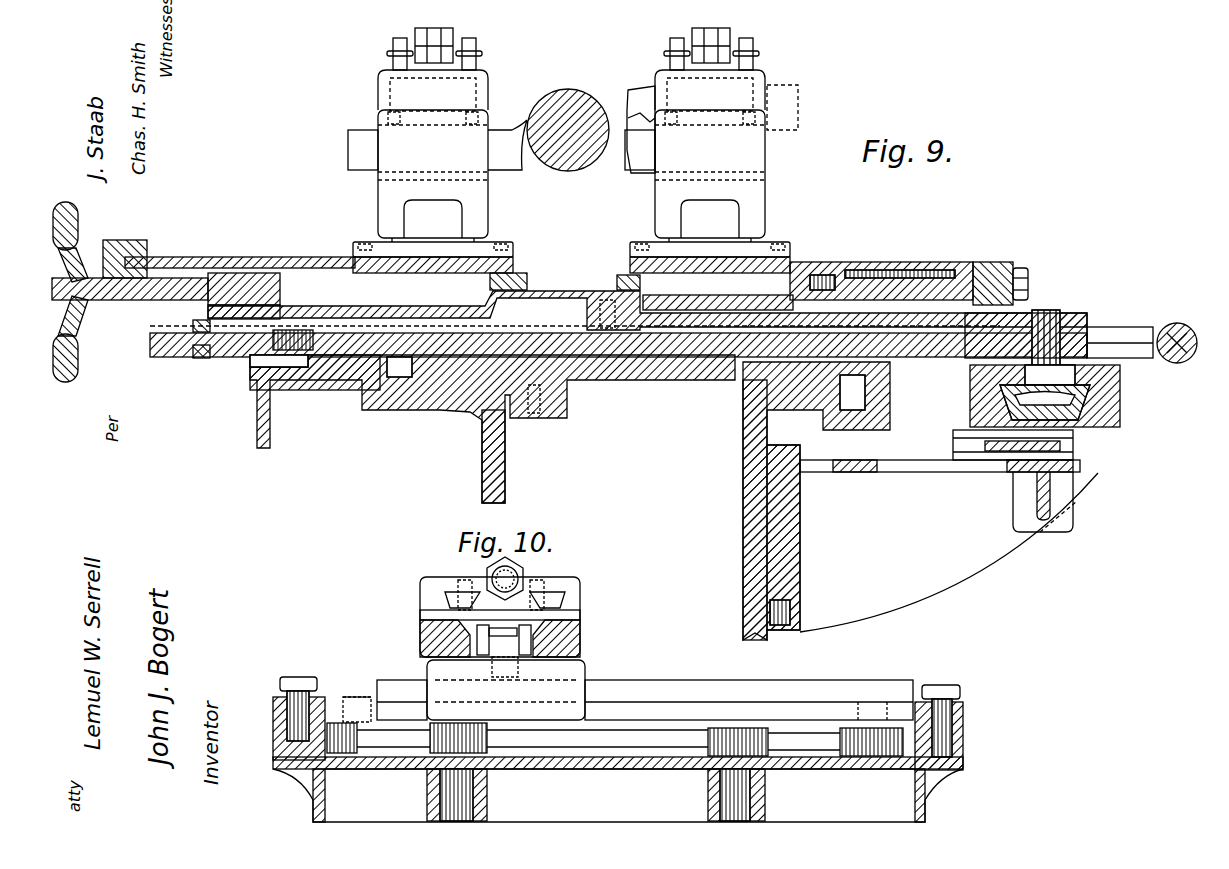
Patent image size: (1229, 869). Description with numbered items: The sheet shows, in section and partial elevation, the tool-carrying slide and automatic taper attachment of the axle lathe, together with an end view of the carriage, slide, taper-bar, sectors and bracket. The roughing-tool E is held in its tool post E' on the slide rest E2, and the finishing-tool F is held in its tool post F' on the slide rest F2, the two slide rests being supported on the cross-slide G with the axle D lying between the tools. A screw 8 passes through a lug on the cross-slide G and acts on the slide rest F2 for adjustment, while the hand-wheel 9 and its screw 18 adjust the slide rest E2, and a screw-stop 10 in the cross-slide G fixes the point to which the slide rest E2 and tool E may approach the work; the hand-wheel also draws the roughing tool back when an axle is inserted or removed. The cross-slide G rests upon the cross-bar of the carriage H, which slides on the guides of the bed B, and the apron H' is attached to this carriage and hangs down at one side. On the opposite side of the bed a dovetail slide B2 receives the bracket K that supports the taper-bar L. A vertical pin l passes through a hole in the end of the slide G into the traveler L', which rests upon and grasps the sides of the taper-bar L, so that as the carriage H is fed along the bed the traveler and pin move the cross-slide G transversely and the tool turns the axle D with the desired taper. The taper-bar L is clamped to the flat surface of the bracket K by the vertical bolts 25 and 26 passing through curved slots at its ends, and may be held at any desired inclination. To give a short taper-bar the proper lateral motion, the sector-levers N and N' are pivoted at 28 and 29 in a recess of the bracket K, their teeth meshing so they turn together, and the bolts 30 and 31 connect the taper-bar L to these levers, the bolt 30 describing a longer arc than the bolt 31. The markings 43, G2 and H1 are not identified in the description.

In FIG. 9, the hand-wheel 9 is at (166, 292).
In FIG. 9, the screw 18 is at (200, 302).
In FIG. 9, the screw-stop 10 is at (194, 350).
In FIG. 9, the screw 8 is at (958, 275).
In FIG. 10, the screw 8 is at (510, 580).
In FIG. 9, the rod end 43 is at (1182, 358).
In FIG. 10, the vertical bolt 25 is at (299, 707).
In FIG. 10, the bolt 31 is at (355, 697).
In FIG. 10, the vertical bolt 26 is at (939, 716).
In FIG. 10, the pivot 28 is at (457, 795).
In FIG. 10, the pivot 29 is at (752, 787).
In FIG. 10, the bolt 30 is at (862, 700).
In FIG. 9, the roughing-tool E is at (507, 145).
In FIG. 9, the tool post E' is at (430, 142).
In FIG. 9, the slide rest E2 is at (326, 260).
In FIG. 9, the finishing-tool F is at (641, 129).
In FIG. 9, the tool post F' is at (711, 142).
In FIG. 9, the slide rest F2 is at (795, 272).
In FIG. 10, the slide rest F2 is at (422, 586).
In FIG. 9, the axle D is at (568, 121).
In FIG. 9, the cross-slide G is at (576, 283).
In FIG. 10, the cross-slide G is at (420, 618).
In FIG. 9, the slide end block G2 is at (1078, 315).
In FIG. 9, the carriage H is at (583, 497).
In FIG. 10, the carriage H is at (519, 622).
In FIG. 9, the apron H' is at (299, 403).
In FIG. 9, the rod H1 is at (651, 331).
In FIG. 9, the vertical pin l is at (1042, 312).
In FIG. 10, the vertical pin l is at (525, 590).
In FIG. 9, the taper-bar L is at (1062, 396).
In FIG. 10, the taper-bar L is at (645, 700).
In FIG. 9, the traveler L' is at (1078, 391).
In FIG. 10, the traveler L' is at (506, 690).
In FIG. 9, the bed B is at (611, 510).
In FIG. 9, the dovetail slide B2 is at (800, 548).
In FIG. 9, the bracket K is at (949, 531).
In FIG. 10, the bracket K is at (618, 789).
In FIG. 10, the sector-lever N is at (517, 760).
In FIG. 10, the sector-lever N' is at (769, 762).